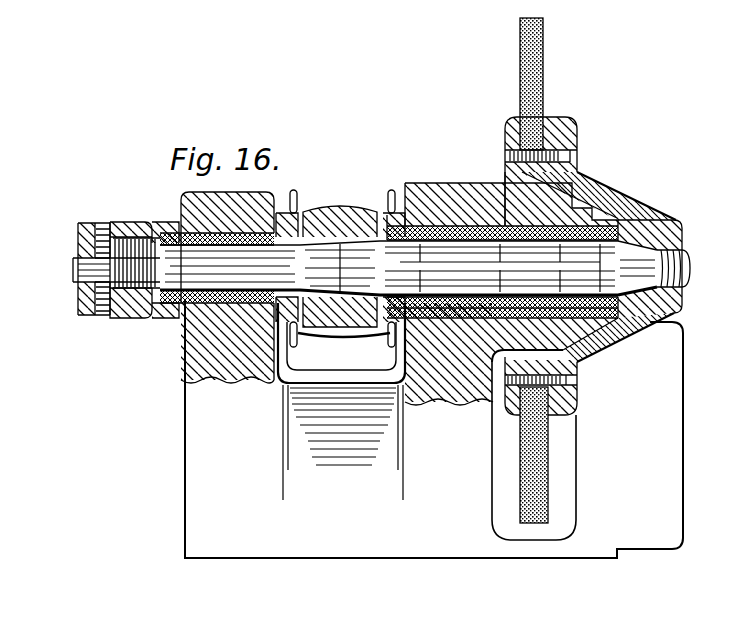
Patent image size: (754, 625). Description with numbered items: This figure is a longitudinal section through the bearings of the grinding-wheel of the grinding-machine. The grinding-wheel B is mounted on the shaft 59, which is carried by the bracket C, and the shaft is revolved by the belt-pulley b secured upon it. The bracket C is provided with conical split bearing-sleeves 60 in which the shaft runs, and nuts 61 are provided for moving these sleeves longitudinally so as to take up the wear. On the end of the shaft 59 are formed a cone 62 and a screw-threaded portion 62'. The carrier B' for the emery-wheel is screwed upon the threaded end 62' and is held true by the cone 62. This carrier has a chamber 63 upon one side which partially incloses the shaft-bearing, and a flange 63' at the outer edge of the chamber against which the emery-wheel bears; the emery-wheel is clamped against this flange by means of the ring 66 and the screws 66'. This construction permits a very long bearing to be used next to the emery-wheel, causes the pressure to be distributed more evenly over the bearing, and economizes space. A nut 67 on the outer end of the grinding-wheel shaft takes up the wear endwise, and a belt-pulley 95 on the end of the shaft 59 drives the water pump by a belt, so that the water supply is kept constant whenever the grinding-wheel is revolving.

The shaft 59 is at (365, 266).
The conical split bearing-sleeves 60 is at (233, 303).
The nuts 61 is at (174, 320).
The cone 62 is at (546, 267).
The screw-threaded portion 62' is at (693, 265).
The chamber 63 is at (599, 184).
The flange 63' is at (563, 403).
The ring 66 is at (562, 393).
The screws 66' is at (571, 379).
The nut 67 is at (135, 316).
The belt-pulley 95 is at (92, 313).
The pulley b is at (350, 207).
The grinding-wheel B is at (541, 122).
The carrier B' is at (619, 414).
The bracket C is at (434, 429).